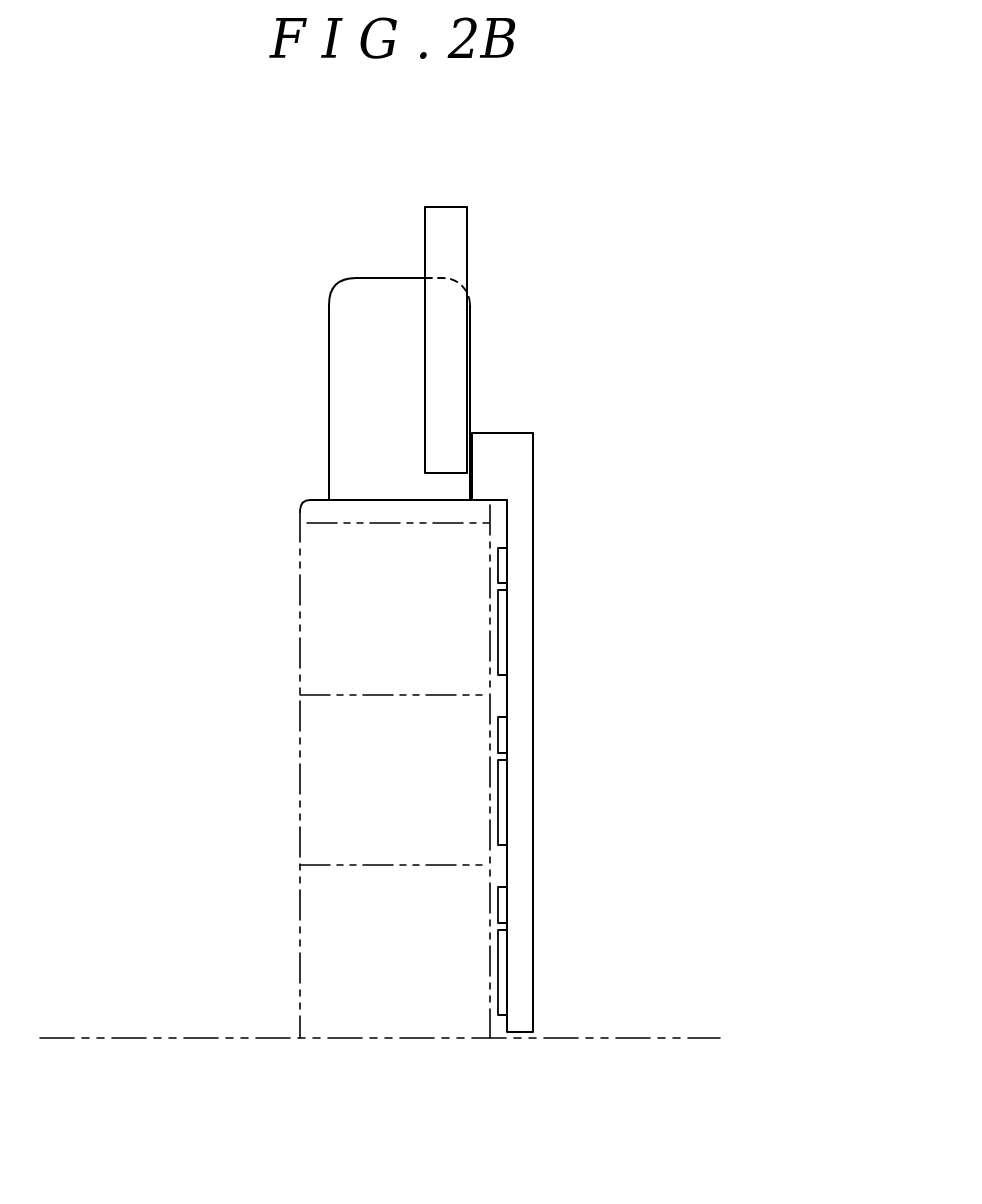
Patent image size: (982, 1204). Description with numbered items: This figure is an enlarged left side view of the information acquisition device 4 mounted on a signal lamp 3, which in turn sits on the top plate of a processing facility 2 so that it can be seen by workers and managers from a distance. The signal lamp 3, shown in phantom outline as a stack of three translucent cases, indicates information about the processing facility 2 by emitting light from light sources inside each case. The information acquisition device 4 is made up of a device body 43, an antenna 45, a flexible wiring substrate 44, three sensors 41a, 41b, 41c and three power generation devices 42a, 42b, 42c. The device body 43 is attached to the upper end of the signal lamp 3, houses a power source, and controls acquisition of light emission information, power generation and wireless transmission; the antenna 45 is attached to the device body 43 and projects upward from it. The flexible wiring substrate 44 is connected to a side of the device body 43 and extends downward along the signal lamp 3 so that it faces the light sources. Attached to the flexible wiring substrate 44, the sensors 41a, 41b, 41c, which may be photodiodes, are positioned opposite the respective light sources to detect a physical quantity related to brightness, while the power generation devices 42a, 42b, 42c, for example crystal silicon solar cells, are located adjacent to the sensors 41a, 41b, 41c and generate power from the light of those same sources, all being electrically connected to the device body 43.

The processing facility 2 is at (169, 1038).
The signal lamp 3 is at (300, 757).
The information acquisition device 4 is at (503, 307).
The sensor 41a is at (507, 623).
The sensor 41b is at (507, 802).
The sensor 41c is at (507, 978).
The power generation device 42a is at (507, 543).
The power generation device 42b is at (507, 709).
The power generation device 42c is at (507, 878).
The device body 43 is at (329, 399).
The flexible wiring substrate 44 is at (533, 497).
The antenna 45 is at (425, 257).